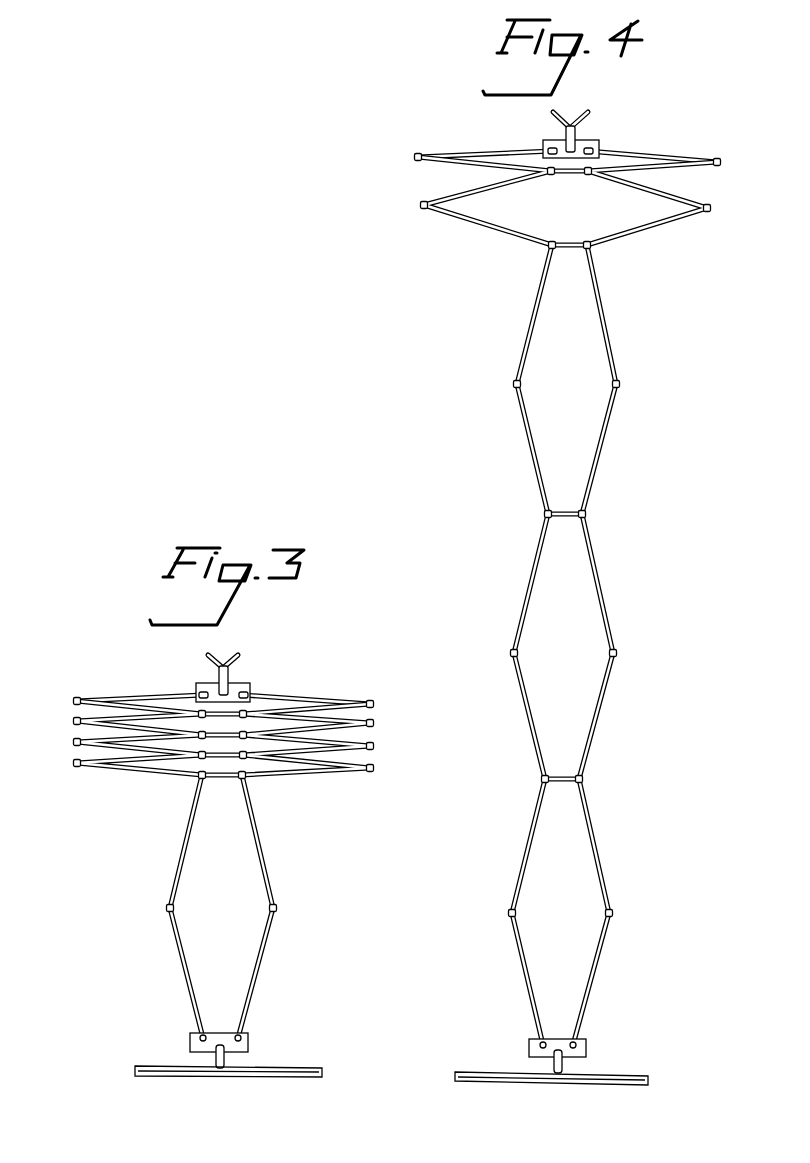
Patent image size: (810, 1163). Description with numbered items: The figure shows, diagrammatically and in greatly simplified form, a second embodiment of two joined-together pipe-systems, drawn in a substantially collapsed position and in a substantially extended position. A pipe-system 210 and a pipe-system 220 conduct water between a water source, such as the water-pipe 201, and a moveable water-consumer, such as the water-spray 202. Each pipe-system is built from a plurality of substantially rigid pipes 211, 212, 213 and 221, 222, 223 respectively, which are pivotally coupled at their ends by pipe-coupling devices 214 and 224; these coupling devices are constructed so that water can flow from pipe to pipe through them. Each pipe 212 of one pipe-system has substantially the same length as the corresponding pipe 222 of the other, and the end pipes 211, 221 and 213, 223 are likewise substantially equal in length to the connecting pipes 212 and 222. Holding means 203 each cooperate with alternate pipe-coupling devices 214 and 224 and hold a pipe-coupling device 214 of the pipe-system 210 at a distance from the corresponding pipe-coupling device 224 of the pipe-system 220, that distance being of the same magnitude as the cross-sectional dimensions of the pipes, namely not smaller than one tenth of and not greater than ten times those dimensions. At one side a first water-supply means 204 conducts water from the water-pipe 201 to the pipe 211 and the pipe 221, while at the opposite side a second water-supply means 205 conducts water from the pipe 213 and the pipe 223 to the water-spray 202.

In FIG. 4, the water-pipe 201 is at (492, 1082).
In FIG. 3, the water-pipe 201 is at (155, 1077).
In FIG. 4, the water-spray 202 is at (590, 120).
In FIG. 3, the water-spray 202 is at (240, 662).
In FIG. 4, the holding means 203 is at (570, 175).
In FIG. 3, the holding means 203 is at (226, 776).
In FIG. 4, the first water-supply means 204 is at (565, 1057).
In FIG. 3, the first water-supply means 204 is at (223, 1053).
In FIG. 4, the second water-supply means 205 is at (560, 138).
In FIG. 3, the second water-supply means 205 is at (212, 683).
In FIG. 4, the pipe-system 210 is at (460, 579).
In FIG. 4, the pipe 211 is at (527, 987).
In FIG. 3, the pipe 211 is at (180, 973).
In FIG. 4, the pipe 212 is at (487, 233).
In FIG. 3, the pipe 212 is at (182, 852).
In FIG. 4, the pipe 213 is at (478, 152).
In FIG. 3, the pipe 213 is at (142, 693).
In FIG. 4, the pipe-coupling device 214 is at (423, 201).
In FIG. 3, the pipe-coupling device 214 is at (74, 763).
In FIG. 4, the pipe-system 220 is at (661, 579).
In FIG. 4, the pipe 221 is at (595, 986).
In FIG. 3, the pipe 221 is at (263, 977).
In FIG. 4, the pipe 222 is at (648, 230).
In FIG. 3, the pipe 222 is at (263, 857).
In FIG. 4, the pipe 223 is at (658, 152).
In FIG. 3, the pipe 223 is at (308, 695).
In FIG. 4, the pipe-coupling device 224 is at (710, 207).
In FIG. 3, the pipe-coupling device 224 is at (372, 768).